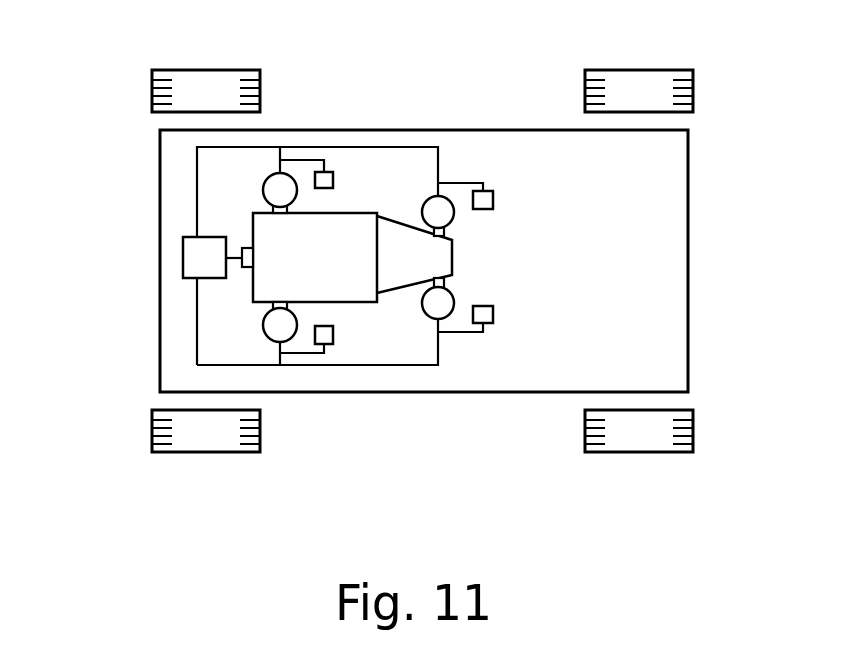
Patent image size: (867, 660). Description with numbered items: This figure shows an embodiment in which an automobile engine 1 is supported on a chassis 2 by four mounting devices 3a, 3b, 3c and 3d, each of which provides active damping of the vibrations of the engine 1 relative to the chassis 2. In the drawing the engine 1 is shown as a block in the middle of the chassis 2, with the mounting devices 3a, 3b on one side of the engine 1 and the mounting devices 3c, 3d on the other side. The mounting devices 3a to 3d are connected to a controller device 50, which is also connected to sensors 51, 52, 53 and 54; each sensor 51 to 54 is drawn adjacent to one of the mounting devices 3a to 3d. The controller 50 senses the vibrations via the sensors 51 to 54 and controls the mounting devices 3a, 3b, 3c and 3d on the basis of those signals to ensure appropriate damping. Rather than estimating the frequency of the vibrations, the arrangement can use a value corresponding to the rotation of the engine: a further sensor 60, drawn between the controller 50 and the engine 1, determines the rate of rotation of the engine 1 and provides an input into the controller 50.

The engine 1 is at (328, 278).
The chassis 2 is at (670, 265).
The mounting device 3a is at (263, 189).
The mounting device 3b is at (263, 327).
The mounting device 3c is at (423, 207).
The mounting device 3d is at (423, 308).
The controller device 50 is at (190, 260).
The sensor 51 is at (333, 177).
The sensor 52 is at (333, 333).
The sensor 53 is at (493, 200).
The sensor 54 is at (493, 315).
The sensor 60 is at (247, 268).